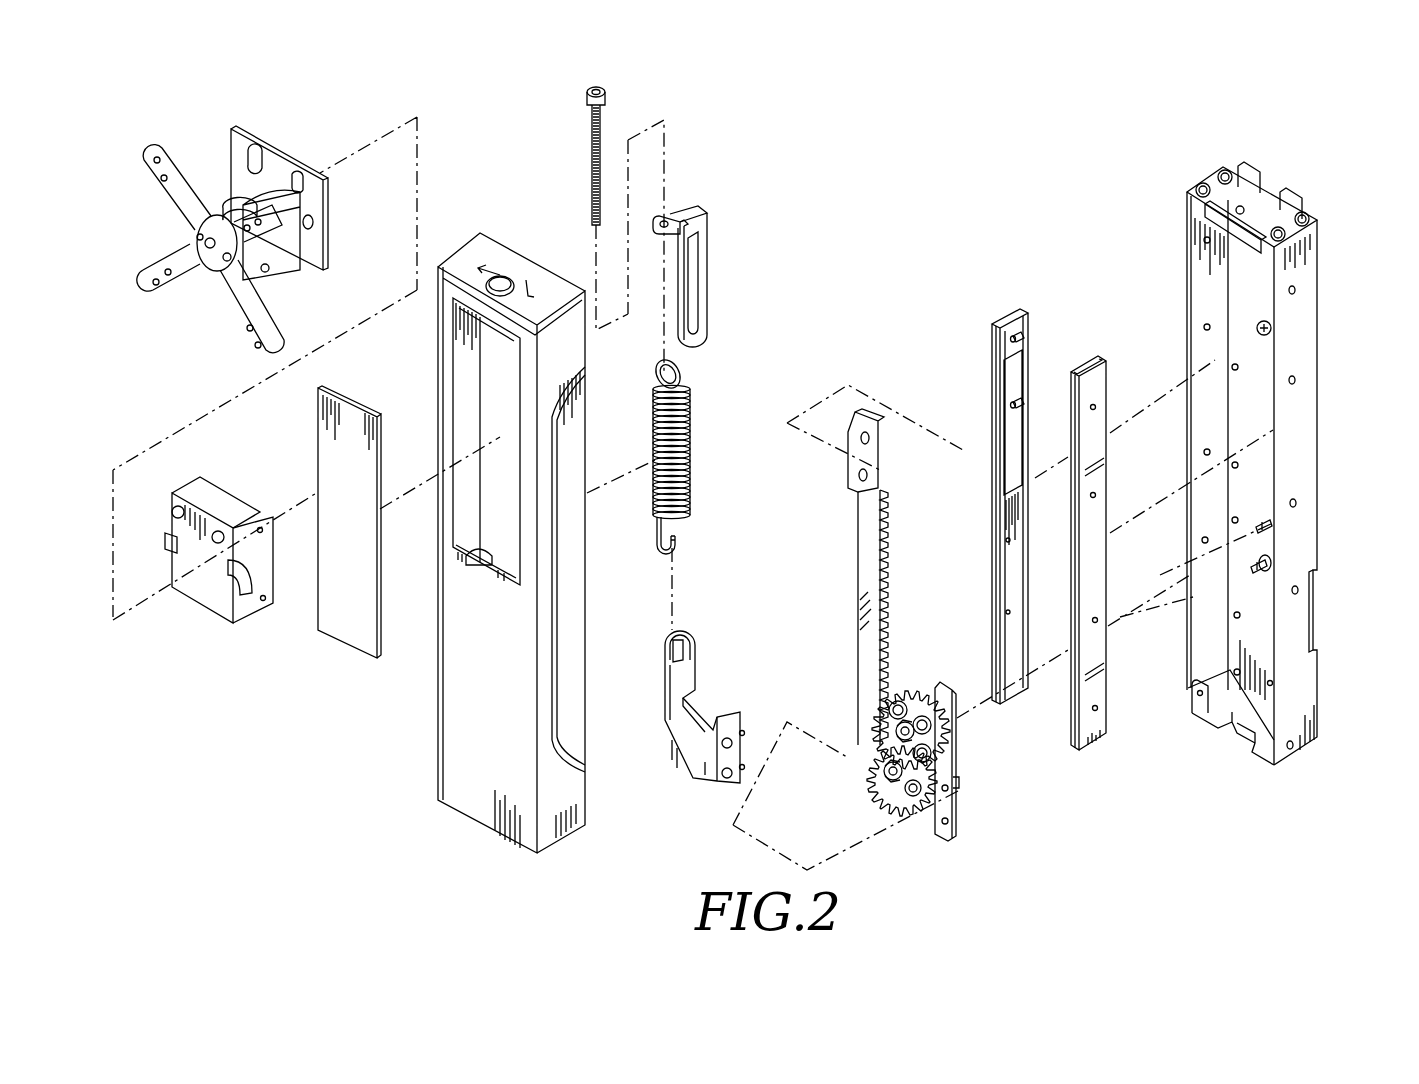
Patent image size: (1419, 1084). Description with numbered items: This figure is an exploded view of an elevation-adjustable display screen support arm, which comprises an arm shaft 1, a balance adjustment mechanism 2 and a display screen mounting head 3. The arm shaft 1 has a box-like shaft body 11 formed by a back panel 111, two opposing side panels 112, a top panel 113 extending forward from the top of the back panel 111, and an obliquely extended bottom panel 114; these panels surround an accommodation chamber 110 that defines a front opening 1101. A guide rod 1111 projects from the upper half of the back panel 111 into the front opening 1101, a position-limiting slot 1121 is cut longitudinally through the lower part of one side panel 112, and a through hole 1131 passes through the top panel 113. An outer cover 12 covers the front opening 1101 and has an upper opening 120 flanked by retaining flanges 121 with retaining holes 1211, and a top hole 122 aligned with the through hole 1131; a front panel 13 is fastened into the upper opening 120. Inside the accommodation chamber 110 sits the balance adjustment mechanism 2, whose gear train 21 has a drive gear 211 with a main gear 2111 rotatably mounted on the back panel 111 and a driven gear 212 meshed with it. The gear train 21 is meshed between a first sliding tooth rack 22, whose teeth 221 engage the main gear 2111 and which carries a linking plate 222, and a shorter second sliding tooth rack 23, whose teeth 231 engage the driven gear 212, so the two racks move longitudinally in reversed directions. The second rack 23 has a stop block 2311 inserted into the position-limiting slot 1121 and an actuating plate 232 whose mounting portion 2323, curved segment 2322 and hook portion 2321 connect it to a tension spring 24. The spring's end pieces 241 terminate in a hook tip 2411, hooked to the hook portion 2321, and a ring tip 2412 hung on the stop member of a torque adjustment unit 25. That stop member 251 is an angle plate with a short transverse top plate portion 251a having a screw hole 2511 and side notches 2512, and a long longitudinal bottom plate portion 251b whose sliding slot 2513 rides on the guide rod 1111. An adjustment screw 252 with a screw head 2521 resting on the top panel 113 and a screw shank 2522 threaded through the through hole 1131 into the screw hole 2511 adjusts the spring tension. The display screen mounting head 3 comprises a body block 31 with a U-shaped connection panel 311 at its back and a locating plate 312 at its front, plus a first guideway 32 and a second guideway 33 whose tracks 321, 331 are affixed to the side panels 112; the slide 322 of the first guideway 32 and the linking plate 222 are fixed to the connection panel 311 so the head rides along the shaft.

The arm shaft 1 is at (1192, 170).
The box-like shaft body 11 is at (1312, 755).
The accommodation chamber 110 is at (1192, 602).
The front opening 1101 is at (1198, 668).
The back panel 111 is at (1250, 400).
The guide rod 1111 is at (1268, 328).
The side panels 112 is at (1300, 482).
The position-limiting slot 1121 is at (1318, 615).
The top panel 113 is at (1272, 213).
The through hole 1131 is at (1241, 205).
The bottom panel 114 is at (1255, 715).
The outer cover 12 is at (487, 805).
The upper opening 120 is at (445, 385).
The retaining flanges 121 is at (500, 565).
The retaining holes 1211 is at (505, 556).
The top hole 122 is at (488, 288).
The front panel 13 is at (335, 462).
The balance adjustment mechanism 2 is at (650, 545).
The gear train 21 is at (866, 788).
The drive gear 211 is at (912, 683).
The main gear 2111 is at (888, 725).
The driven gear 212 is at (900, 795).
The first sliding tooth rack 22 is at (866, 524).
The teeth 221 is at (886, 556).
The linking plate 222 is at (868, 452).
The second sliding tooth rack 23 is at (953, 812).
The teeth 231 is at (940, 822).
The stop block 2311 is at (958, 784).
The actuating plate 232 is at (680, 675).
The hook portion 2321 is at (676, 655).
The curved segment 2322 is at (700, 735).
The mounting portion 2323 is at (735, 755).
The tension spring 24 is at (672, 478).
The end pieces 241 is at (688, 533).
The hook tip 2411 is at (677, 548).
The ring tip 2412 is at (680, 375).
The torque adjustment unit 25 is at (680, 150).
The stop member 251 is at (712, 223).
The short transverse top plate portion 251a is at (690, 210).
The long longitudinal bottom plate portion 251b is at (698, 275).
The screw hole 2511 is at (665, 218).
The side notches 2512 is at (684, 223).
The longitudinal sliding slot 2513 is at (693, 305).
The adjustment screw 252 is at (583, 163).
The screw head 2521 is at (588, 95).
The screw shank 2522 is at (596, 212).
The display screen mounting head 3 is at (292, 150).
The body block 31 is at (283, 250).
The connection panel 311 is at (215, 590).
The locating plate 312 is at (165, 292).
The first guideway 32 is at (996, 307).
The track 321 is at (1000, 352).
The slide 322 is at (1015, 378).
The second guideway 33 is at (1082, 352).
The track 331 is at (1200, 380).